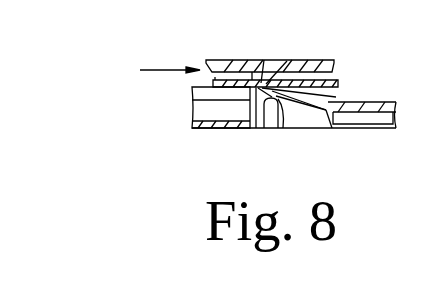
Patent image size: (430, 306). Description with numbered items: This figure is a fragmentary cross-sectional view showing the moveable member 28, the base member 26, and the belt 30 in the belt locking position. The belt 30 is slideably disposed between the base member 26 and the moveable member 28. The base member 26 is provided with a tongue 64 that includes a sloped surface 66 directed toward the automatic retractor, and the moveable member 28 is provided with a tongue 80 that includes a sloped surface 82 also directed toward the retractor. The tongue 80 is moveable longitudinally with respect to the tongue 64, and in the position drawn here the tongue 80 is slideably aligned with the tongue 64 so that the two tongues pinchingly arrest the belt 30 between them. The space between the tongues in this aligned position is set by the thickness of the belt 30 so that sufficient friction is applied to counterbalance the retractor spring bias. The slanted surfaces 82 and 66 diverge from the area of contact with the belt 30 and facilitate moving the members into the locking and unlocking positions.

The base member 26 is at (232, 115).
The moveable member 28 is at (318, 60).
The belt 30 is at (339, 81).
The tongue 64 is at (280, 128).
The sloped surface 66 is at (337, 98).
The tongue 80 is at (266, 60).
The sloped surface 82 is at (290, 60).